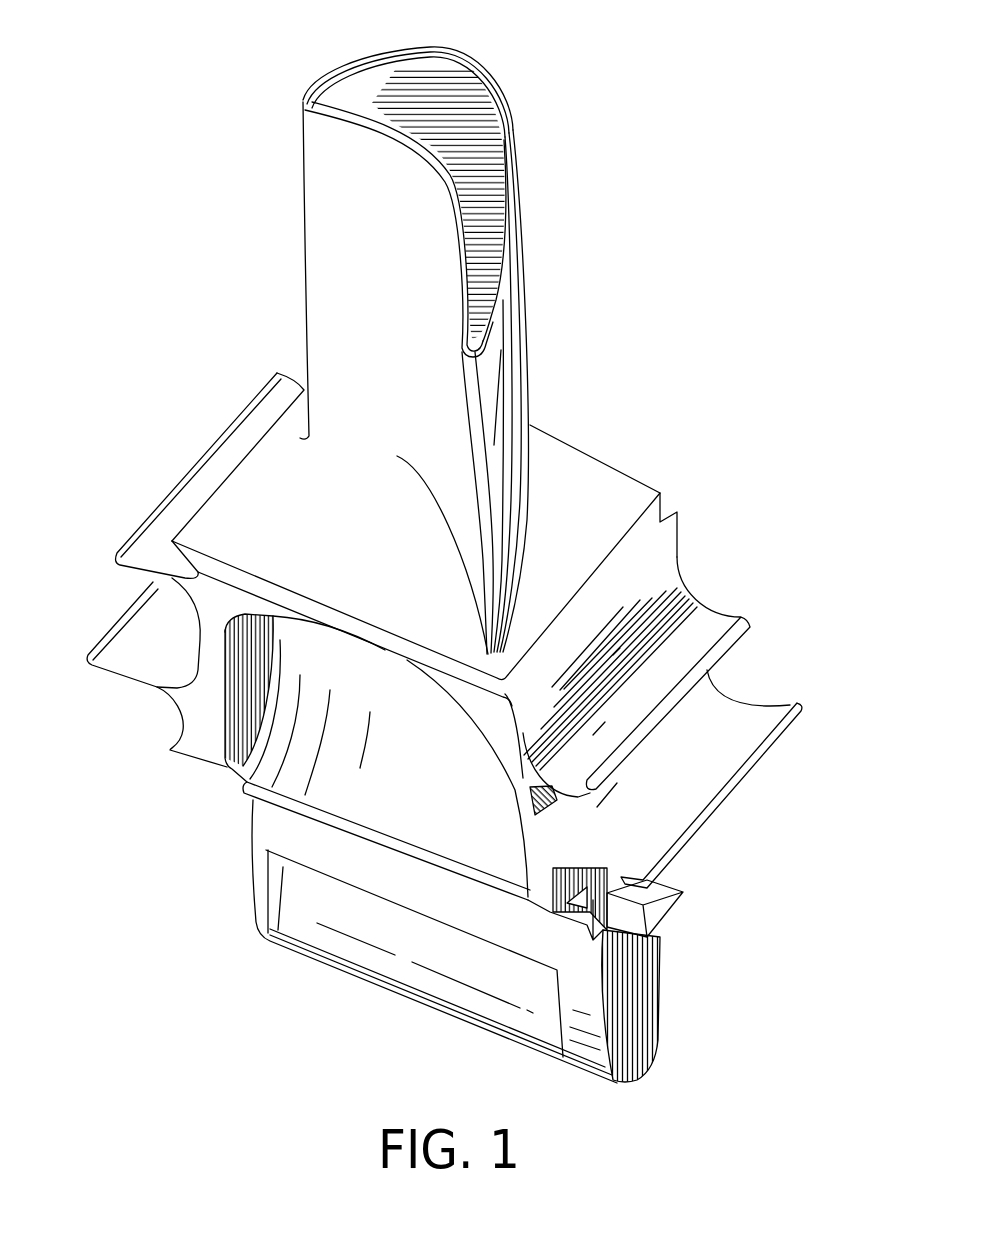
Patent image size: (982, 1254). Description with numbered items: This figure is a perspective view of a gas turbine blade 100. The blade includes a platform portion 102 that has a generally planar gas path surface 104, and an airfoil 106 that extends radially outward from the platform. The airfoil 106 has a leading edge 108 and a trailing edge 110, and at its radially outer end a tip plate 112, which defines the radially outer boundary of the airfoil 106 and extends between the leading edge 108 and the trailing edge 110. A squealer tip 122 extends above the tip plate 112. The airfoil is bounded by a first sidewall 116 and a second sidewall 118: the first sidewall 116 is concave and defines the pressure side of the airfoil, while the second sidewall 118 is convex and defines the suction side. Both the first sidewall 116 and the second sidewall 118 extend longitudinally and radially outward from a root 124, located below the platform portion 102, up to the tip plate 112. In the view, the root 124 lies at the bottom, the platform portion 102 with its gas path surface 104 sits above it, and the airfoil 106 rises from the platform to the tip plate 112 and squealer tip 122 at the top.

The gas turbine blade 100 is at (112, 132).
The platform portion 102 is at (670, 513).
The gas path surface 104 is at (637, 487).
The airfoil 106 is at (407, 302).
The leading edge 108 is at (301, 156).
The trailing edge 110 is at (473, 419).
The tip plate 112 is at (437, 67).
The first sidewall 116 is at (378, 246).
The second sidewall 118 is at (514, 300).
The squealer tip 122 is at (499, 108).
The root 124 is at (260, 867).